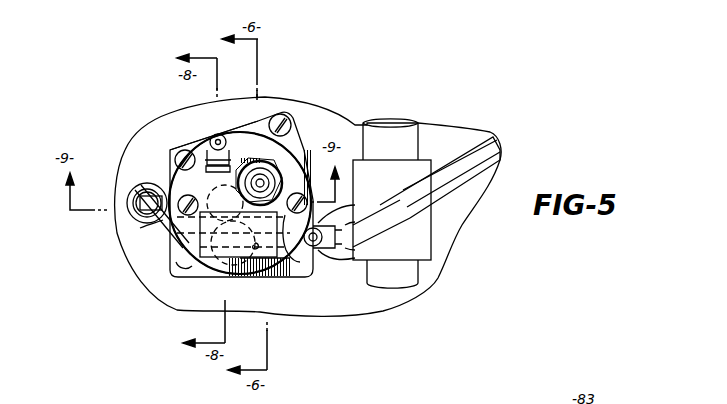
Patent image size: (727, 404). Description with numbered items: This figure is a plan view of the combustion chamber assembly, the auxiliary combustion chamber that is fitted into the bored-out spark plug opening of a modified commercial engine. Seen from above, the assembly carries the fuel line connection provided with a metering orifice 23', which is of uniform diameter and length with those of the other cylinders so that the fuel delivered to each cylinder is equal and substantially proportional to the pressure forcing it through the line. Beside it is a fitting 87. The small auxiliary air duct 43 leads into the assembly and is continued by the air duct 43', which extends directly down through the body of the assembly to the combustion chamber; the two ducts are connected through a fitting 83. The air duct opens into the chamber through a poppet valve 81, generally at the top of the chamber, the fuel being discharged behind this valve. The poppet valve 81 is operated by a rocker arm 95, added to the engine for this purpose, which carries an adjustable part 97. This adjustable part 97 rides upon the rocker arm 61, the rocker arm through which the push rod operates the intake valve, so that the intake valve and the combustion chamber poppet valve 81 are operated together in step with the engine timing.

The metering orifice 23' is at (207, 144).
The fitting 87 is at (273, 170).
The poppet valve 81 is at (162, 207).
The air duct 43' is at (162, 225).
The rocker arm 95 is at (157, 227).
The fitting 83 is at (253, 280).
The auxiliary air duct 43 is at (299, 262).
The adjustable part 97 is at (330, 244).
The rocker arm 61 is at (480, 135).